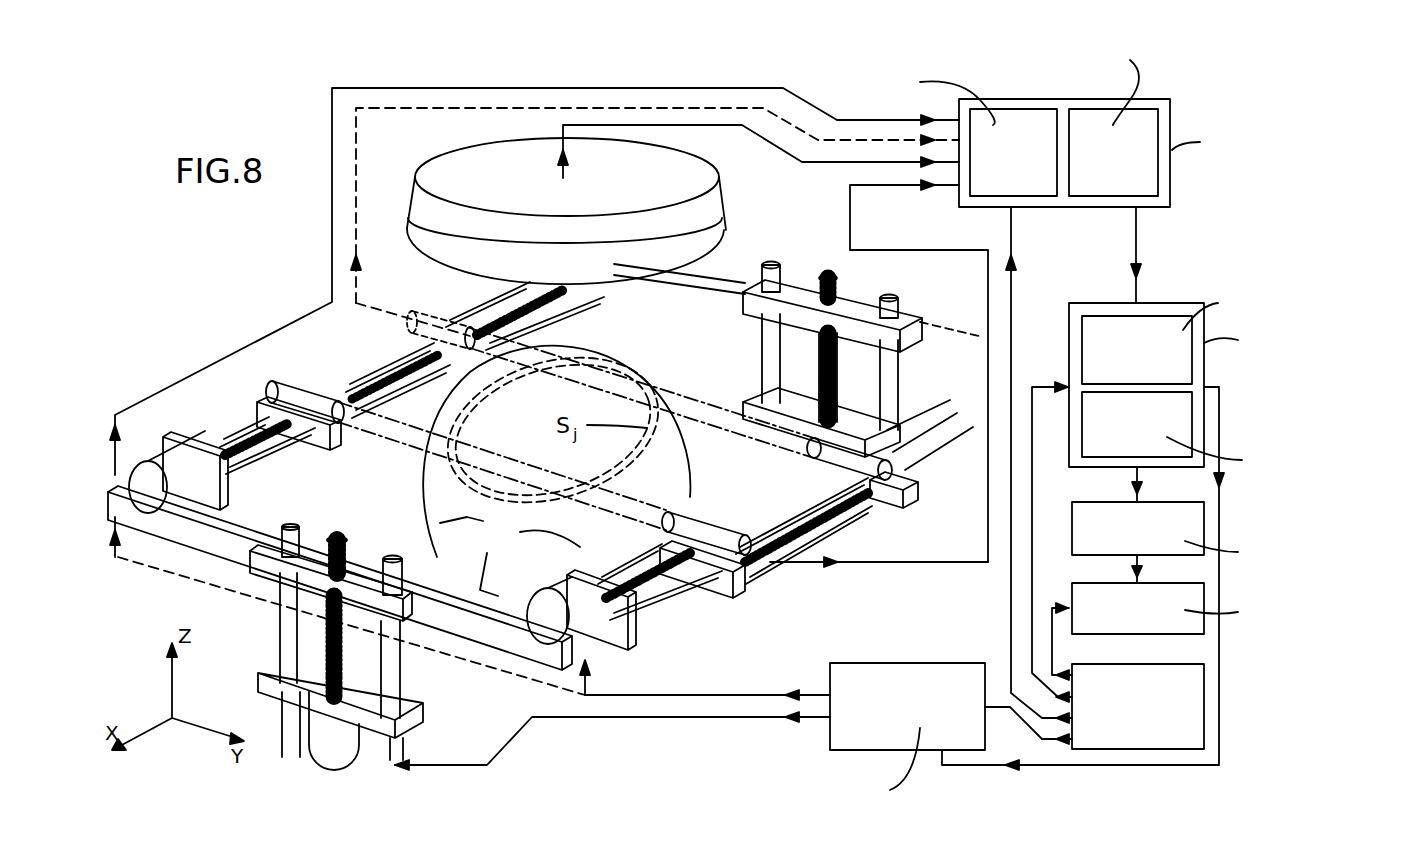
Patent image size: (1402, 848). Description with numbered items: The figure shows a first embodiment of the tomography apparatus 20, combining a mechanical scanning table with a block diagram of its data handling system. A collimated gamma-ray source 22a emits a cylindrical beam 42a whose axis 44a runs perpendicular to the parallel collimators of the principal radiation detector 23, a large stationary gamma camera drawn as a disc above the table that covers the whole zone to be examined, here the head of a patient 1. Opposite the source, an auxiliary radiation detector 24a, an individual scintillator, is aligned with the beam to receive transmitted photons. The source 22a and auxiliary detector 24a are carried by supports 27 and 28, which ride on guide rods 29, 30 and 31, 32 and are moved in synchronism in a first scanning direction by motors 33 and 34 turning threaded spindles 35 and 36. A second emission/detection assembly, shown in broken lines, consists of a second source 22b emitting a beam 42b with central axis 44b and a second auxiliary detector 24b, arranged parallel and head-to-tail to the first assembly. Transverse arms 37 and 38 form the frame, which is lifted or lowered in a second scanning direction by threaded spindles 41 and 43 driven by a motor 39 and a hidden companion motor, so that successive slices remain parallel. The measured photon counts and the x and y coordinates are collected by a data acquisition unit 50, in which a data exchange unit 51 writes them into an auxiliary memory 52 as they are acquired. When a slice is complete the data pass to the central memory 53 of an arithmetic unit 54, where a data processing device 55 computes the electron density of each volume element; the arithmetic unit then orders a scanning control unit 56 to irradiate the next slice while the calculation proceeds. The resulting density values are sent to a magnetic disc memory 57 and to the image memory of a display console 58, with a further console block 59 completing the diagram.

The specimen 1 is at (433, 495).
The tomography apparatus 20 is at (240, 325).
The source 22a is at (290, 392).
The second source 22b is at (883, 485).
The principal radiation detector 23 is at (450, 178).
The auxiliary radiation detector 24a is at (798, 548).
The second auxiliary detector 24b is at (407, 322).
The support 27 is at (273, 407).
The support 28 is at (757, 567).
The guide rod 29 is at (243, 428).
The guide rod 30 is at (282, 448).
The guide rod 31 is at (643, 557).
The guide rod 32 is at (687, 585).
The motor 33 is at (167, 467).
The motor 34 is at (590, 627).
The threaded spindle 35 is at (252, 445).
The threaded spindle 36 is at (647, 580).
The transverse arm 37 is at (222, 542).
The transverse arm 38 is at (722, 278).
The motor 39 is at (348, 740).
The threaded spindle 41 is at (327, 647).
The beam 42a is at (400, 438).
The photon beam 42b is at (710, 420).
The threaded spindle 43 is at (817, 375).
The axis 44a is at (413, 433).
The central axis 44b is at (688, 398).
The data acquisition unit 50 is at (1172, 147).
The data exchange unit 51 is at (1025, 178).
The auxiliary memory 52 is at (1145, 180).
The central memory 53 is at (1090, 343).
The arithmetic unit 54 is at (1177, 301).
The data processing device 55 is at (1098, 421).
The scanning control unit 56 is at (908, 678).
The memory 57 is at (1085, 518).
The display console 58 is at (1090, 597).
The control console 59 is at (1147, 682).